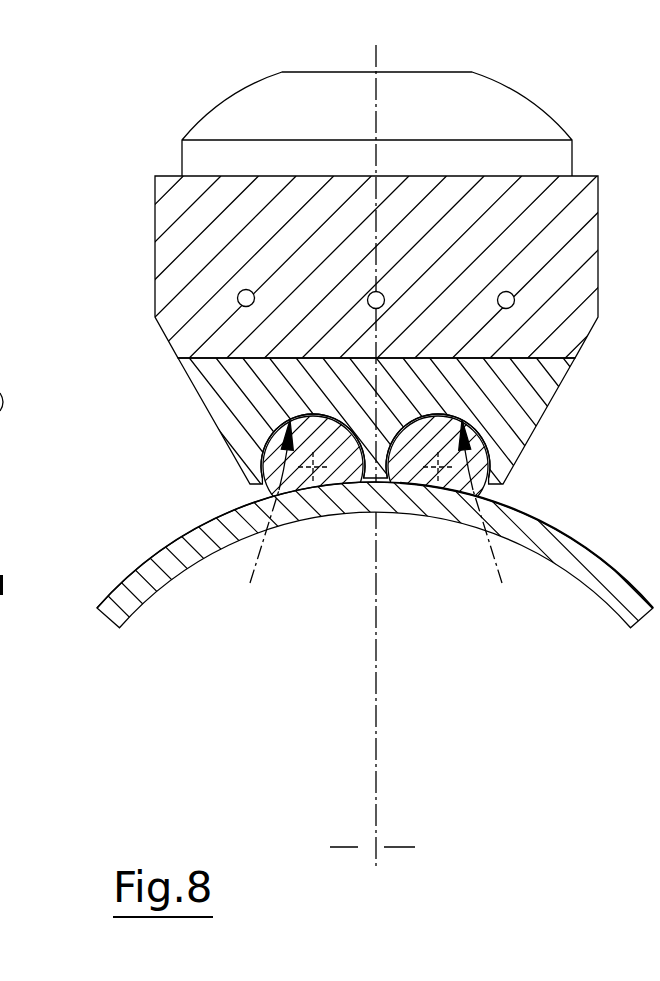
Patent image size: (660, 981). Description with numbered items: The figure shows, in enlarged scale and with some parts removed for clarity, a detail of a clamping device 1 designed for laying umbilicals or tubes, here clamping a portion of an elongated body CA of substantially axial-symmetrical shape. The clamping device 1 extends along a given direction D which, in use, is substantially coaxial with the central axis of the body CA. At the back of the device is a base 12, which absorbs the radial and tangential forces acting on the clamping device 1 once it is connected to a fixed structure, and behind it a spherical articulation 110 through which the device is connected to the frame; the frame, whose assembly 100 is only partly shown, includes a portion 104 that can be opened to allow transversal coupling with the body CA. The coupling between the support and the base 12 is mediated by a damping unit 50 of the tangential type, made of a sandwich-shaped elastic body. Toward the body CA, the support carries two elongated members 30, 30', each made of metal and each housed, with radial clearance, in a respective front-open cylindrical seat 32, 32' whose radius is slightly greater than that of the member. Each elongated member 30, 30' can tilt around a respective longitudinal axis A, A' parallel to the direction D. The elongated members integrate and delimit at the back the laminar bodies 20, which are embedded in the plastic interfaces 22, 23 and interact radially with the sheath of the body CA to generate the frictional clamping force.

The clamping device 1 is at (92, 277).
The cap assembly 100 is at (88, 99).
The spherical articulation 110 is at (200, 155).
The base 12 is at (155, 230).
The damping unit 50 is at (419, 287).
The elongated member 30 is at (384, 424).
The elongated member 30' is at (512, 408).
The cylindrical seat 32 is at (236, 442).
The cylindrical seat 32' is at (506, 446).
The laminar body 20 is at (308, 486).
The interface 22 is at (287, 480).
The interface 23 is at (464, 480).
The portion 104 is at (0, 492).
The elongated body CA is at (140, 606).
The longitudinal axis A is at (260, 517).
The longitudinal axis A' is at (494, 517).
The given direction D is at (354, 835).